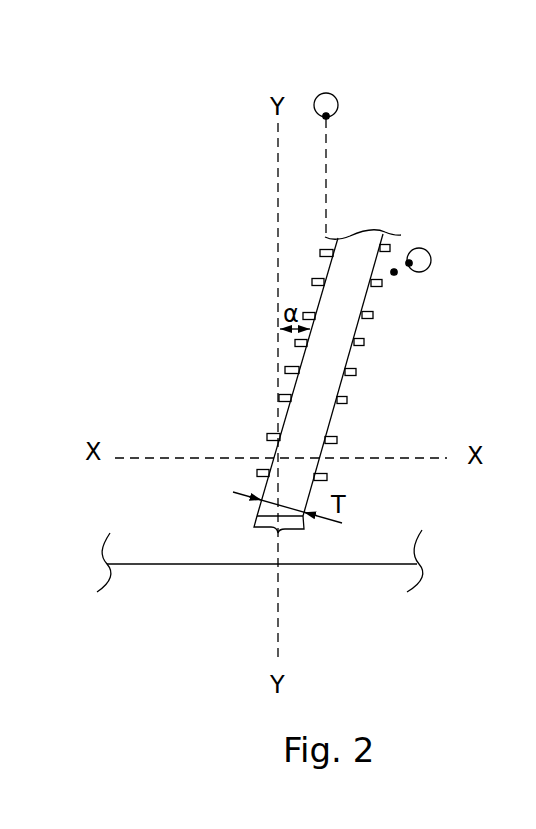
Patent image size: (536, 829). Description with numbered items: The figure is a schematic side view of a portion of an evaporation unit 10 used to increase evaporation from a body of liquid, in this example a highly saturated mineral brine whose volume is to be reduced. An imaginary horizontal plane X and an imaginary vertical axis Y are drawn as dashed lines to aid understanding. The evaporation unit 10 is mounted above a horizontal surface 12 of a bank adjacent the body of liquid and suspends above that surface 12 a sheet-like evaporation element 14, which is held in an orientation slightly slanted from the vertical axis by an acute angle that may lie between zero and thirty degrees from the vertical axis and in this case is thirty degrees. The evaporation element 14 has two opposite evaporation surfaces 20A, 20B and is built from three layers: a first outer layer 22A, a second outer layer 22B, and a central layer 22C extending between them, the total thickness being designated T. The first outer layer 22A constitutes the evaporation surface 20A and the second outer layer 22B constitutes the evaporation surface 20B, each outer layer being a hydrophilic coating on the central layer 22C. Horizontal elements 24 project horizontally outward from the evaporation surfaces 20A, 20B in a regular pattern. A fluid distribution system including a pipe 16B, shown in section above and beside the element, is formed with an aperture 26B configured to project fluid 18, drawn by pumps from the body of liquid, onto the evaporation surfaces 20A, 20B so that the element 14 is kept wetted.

The evaporation unit 10 is at (200, 137).
The horizontal surface 12 is at (377, 565).
The evaporation element 14 is at (333, 373).
The pipe 16B is at (338, 102).
The fluid 18 is at (396, 275).
The evaporation surface 20A is at (266, 487).
The evaporation surface 20B is at (311, 488).
The first outer layer 22A is at (255, 520).
The second outer layer 22B is at (307, 521).
The central layer 22C is at (280, 534).
The horizontal elements 24 is at (268, 435).
The aperture 26B is at (328, 118).